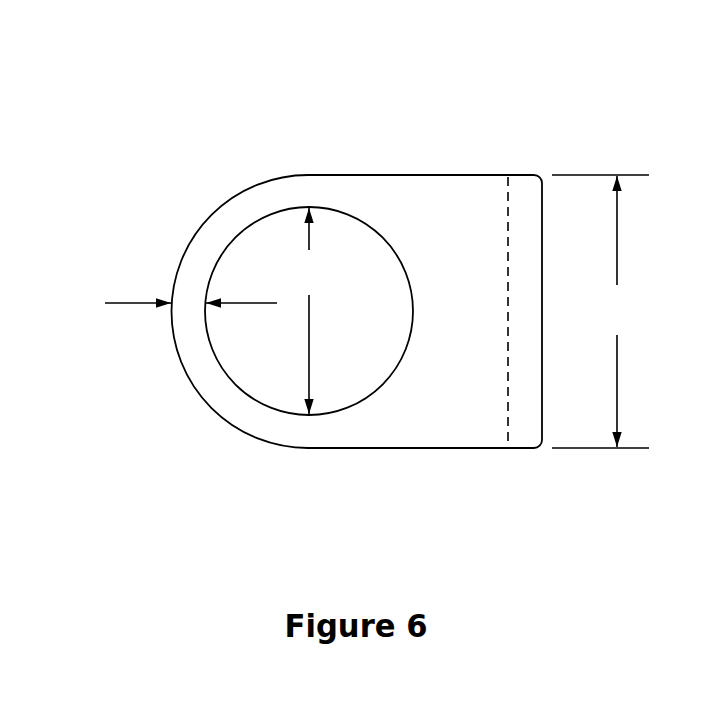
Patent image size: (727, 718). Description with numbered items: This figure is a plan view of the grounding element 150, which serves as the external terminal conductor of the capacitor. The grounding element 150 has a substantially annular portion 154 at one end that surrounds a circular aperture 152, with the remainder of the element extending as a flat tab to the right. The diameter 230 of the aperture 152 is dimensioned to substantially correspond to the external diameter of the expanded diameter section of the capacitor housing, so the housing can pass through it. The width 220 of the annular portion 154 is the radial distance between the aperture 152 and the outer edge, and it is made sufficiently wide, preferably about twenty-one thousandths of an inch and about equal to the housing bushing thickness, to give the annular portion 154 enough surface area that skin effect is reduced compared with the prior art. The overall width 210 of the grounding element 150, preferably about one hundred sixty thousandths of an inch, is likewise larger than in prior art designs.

The grounding element 150 is at (403, 127).
The aperture 152 is at (260, 352).
The substantially annular portion 154 is at (217, 235).
The width of the grounding element 210 is at (600, 311).
The width of the substantially annular portion 220 is at (158, 304).
The diameter of the aperture 230 is at (312, 311).